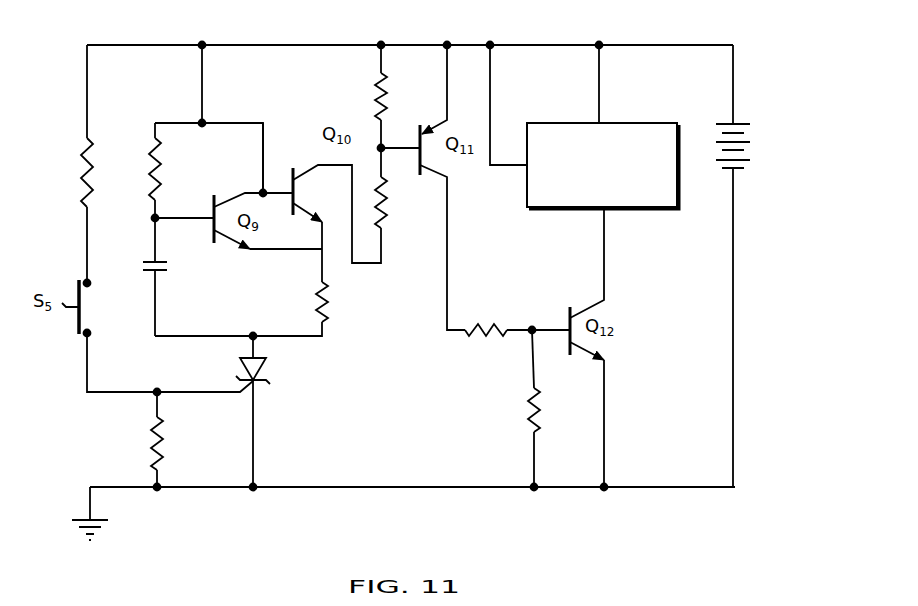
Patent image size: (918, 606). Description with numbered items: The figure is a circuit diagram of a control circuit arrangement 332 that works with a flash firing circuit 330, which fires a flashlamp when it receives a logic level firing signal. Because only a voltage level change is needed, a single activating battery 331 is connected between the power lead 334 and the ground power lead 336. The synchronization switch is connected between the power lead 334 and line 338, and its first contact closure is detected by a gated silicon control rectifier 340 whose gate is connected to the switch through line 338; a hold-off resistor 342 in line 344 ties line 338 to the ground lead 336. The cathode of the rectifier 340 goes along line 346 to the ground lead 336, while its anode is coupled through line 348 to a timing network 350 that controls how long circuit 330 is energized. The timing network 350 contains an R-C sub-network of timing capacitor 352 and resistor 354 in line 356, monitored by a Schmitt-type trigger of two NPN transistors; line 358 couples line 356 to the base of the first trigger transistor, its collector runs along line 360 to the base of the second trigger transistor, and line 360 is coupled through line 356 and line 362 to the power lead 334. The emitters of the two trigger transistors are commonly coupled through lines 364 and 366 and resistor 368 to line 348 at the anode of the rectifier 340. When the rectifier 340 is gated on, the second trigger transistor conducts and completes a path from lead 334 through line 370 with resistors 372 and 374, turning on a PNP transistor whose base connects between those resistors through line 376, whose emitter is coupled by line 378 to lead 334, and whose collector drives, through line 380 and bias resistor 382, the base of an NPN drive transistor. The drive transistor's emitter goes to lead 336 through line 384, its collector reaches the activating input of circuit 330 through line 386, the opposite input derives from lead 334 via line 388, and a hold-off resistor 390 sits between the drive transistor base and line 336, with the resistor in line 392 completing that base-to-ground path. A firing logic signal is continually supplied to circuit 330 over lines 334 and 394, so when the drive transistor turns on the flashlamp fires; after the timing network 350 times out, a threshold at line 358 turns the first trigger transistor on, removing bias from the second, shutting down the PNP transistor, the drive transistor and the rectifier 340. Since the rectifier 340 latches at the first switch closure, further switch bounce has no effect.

The flash firing circuit 330 is at (638, 123).
The activating battery 331 is at (748, 146).
The control circuit arrangement 332 is at (752, 90).
The power lead 334 is at (665, 44).
The ground power lead 336 is at (654, 488).
The line 338 is at (120, 391).
The gated silicon control rectifier 340 is at (268, 368).
The hold-off resistor 342 is at (152, 449).
The line 344 is at (160, 394).
The line 346 is at (255, 445).
The line 348 is at (246, 362).
The timing network 350 is at (137, 229).
The timing capacitor 352 is at (145, 275).
The resistor 354 is at (153, 155).
The line 356 is at (156, 210).
The line 358 is at (185, 221).
The line 360 is at (263, 186).
The line 362 is at (203, 98).
The line 364 is at (325, 328).
The line 366 is at (282, 251).
The resistor 368 is at (318, 296).
The line 370 is at (380, 67).
The resistor 372 is at (383, 106).
The resistor 374 is at (385, 216).
The line 376 is at (401, 152).
The line 378 is at (448, 100).
The line 380 is at (452, 260).
The bias resistor 382 is at (487, 324).
The line 384 is at (607, 412).
The line 386 is at (605, 242).
The line 388 is at (602, 89).
The hold-off resistor 390 is at (528, 401).
The lead 392 is at (533, 356).
The line 394 is at (492, 98).